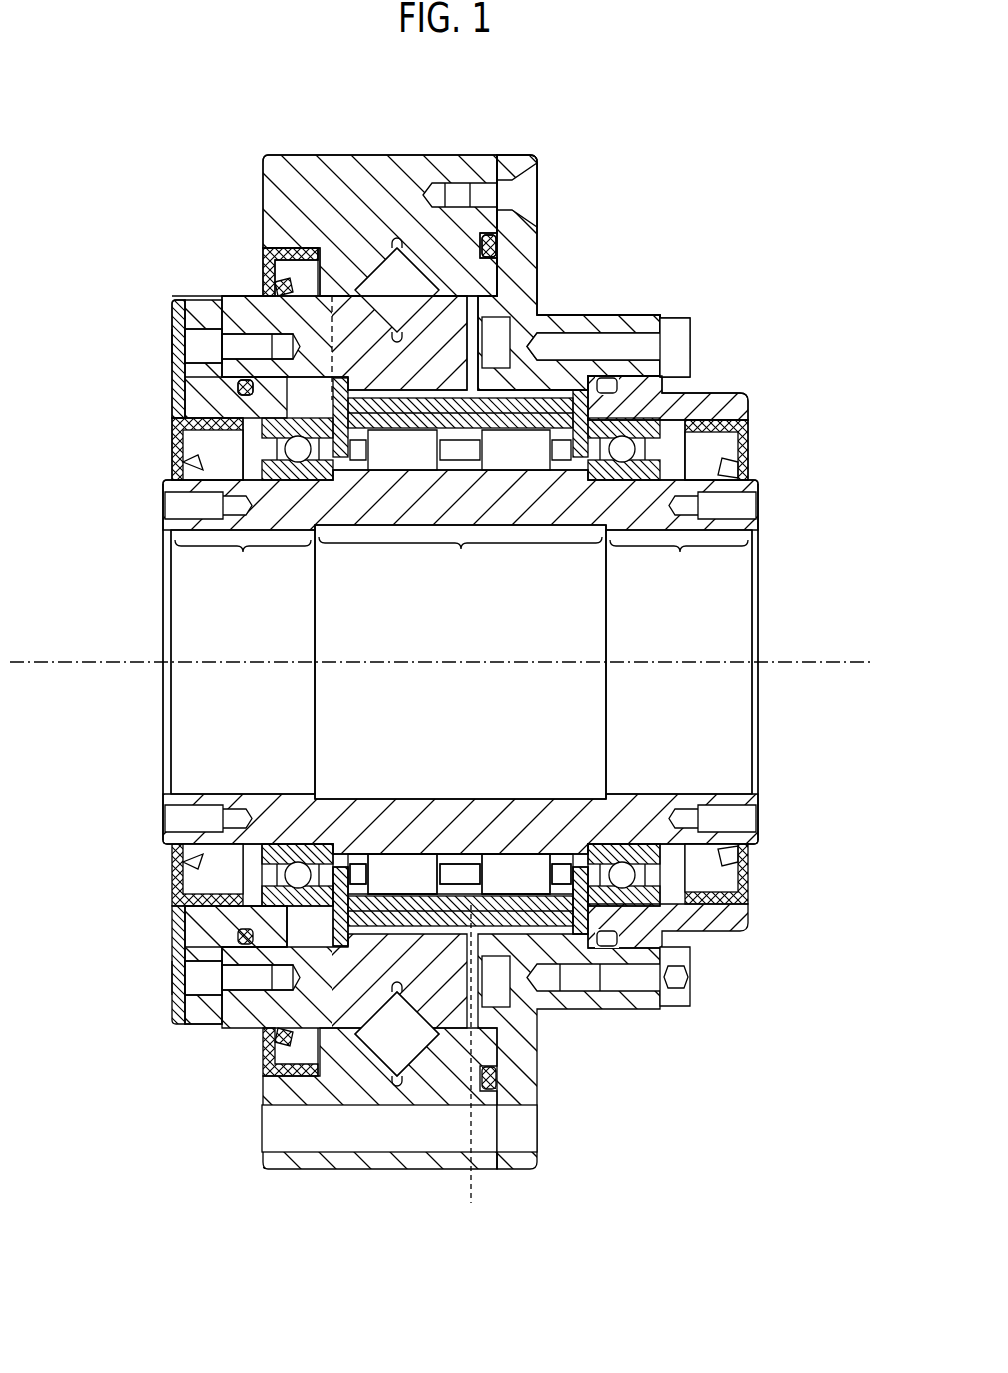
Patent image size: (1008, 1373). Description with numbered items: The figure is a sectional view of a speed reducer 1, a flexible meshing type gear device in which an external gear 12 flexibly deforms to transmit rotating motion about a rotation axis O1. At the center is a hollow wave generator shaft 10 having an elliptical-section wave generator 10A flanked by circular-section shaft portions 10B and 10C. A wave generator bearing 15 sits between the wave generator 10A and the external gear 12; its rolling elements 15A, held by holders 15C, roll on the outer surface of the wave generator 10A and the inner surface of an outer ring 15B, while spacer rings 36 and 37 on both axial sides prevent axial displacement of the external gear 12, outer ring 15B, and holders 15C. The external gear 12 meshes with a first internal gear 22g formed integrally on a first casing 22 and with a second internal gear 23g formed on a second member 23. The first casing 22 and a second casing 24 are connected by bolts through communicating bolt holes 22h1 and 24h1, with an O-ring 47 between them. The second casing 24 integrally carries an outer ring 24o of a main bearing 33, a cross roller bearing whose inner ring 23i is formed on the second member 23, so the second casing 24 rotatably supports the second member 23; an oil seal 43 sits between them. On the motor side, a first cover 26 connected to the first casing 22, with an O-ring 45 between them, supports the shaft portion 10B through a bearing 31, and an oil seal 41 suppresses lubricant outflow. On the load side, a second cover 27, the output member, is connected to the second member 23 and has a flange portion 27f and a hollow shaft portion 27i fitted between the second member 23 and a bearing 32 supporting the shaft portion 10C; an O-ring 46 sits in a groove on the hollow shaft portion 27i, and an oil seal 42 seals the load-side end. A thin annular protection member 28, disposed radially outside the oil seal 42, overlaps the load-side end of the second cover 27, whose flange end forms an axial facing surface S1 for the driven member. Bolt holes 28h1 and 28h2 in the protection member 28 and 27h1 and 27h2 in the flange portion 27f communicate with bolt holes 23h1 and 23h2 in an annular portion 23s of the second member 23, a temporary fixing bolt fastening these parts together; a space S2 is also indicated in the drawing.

The speed reducer 1 is at (673, 165).
The wave generator shaft 10 is at (740, 578).
The wave generator 10A is at (460, 662).
The shaft portion 10B is at (679, 662).
The shaft portion 10C is at (243, 662).
The external gear 12 is at (477, 1071).
The wave generator bearing 15 is at (587, 900).
The rolling elements 15A is at (509, 866).
The outer ring 15B is at (424, 866).
The holders 15C is at (558, 866).
The first casing 22 is at (516, 162).
The first internal gear 22g is at (600, 368).
The bolt hole 22h1 is at (527, 1130).
The second member 23 is at (410, 384).
The second internal gear 23g is at (517, 388).
The bolt hole 23h1 is at (247, 330).
The bolt holes 23h2 is at (260, 998).
The inner ring 23i is at (332, 296).
The annular portion 23s is at (352, 283).
The second casing 24 is at (470, 168).
The bolt hole 24h1 is at (388, 1140).
The outer ring 24o is at (393, 253).
The first cover 26 is at (723, 393).
The second cover 27 is at (95, 897).
The flange portion 27f is at (202, 949).
The hollow shaft portion 27i is at (260, 915).
The bolt hole 27h1 is at (205, 327).
The bolt holes 27h2 is at (203, 1002).
The protection member 28 is at (178, 303).
The bolt hole 28h1 is at (180, 360).
The bolt holes 28h2 is at (182, 988).
The bearing 31 is at (635, 845).
The bearing 32 is at (287, 845).
The main bearing 33 is at (388, 1052).
The spacer ring 36 is at (580, 855).
The spacer ring 37 is at (334, 855).
The oil seal 41 is at (750, 447).
The oil seal 42 is at (178, 447).
The oil seal 43 is at (287, 322).
The O-ring 45 is at (668, 357).
The O-ring 46 is at (240, 394).
The O-ring 47 is at (497, 246).
The rotation axis O1 is at (465, 660).
The axial facing surface S1 is at (180, 393).
The space S2 is at (180, 296).